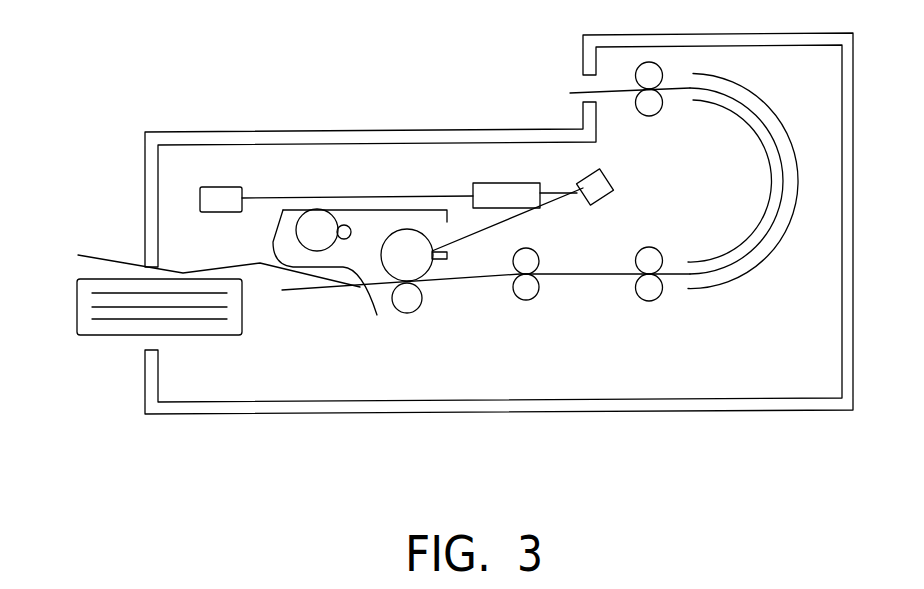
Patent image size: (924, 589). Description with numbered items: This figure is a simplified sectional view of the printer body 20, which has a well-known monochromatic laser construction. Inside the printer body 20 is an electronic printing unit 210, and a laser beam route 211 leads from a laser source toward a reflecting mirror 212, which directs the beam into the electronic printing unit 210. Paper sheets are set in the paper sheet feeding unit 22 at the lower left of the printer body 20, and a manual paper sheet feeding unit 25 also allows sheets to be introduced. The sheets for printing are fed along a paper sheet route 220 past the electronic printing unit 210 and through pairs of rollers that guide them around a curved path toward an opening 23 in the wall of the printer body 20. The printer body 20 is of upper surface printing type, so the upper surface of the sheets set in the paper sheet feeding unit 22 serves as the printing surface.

The printer body 20 is at (458, 412).
The paper sheet feeding unit 22 is at (95, 278).
The paper inlet slot rollers 23 is at (583, 117).
The manual paper sheet feeding unit 25 is at (128, 262).
The electronic printing unit 210 is at (360, 210).
The laser beam route 211 is at (297, 197).
The reflecting mirror 212 is at (593, 177).
The paper sheet route 220 is at (585, 275).